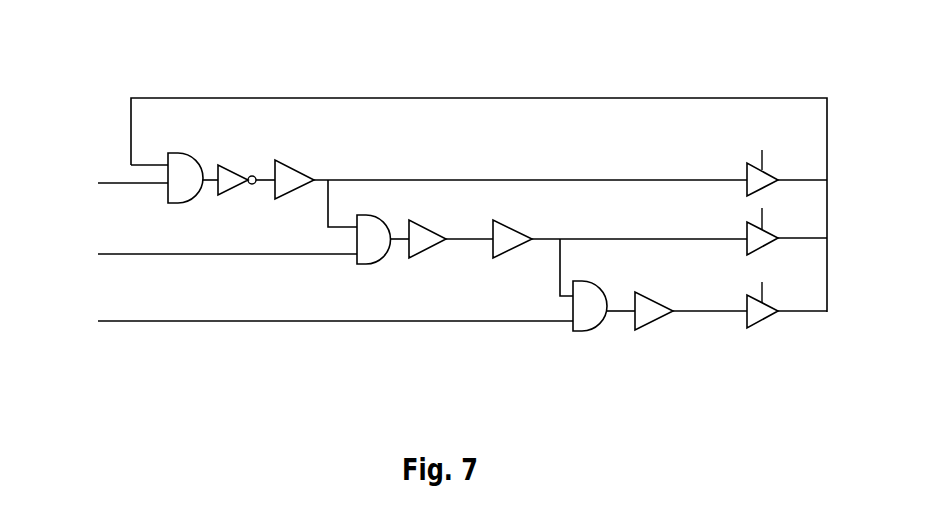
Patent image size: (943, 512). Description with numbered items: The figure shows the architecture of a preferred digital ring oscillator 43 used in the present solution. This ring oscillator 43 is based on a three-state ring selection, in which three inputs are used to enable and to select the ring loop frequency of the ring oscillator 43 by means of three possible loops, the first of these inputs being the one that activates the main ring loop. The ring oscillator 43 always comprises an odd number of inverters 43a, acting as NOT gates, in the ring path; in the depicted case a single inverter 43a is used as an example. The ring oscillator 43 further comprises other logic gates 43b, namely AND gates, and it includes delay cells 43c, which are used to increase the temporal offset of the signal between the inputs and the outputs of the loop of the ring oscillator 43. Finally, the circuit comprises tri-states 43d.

The digital ring oscillator 43 is at (693, 48).
The inverter 43a is at (235, 146).
The logic gate 43b is at (582, 356).
The delay cell 43c is at (650, 356).
The tri-state 43d is at (762, 356).